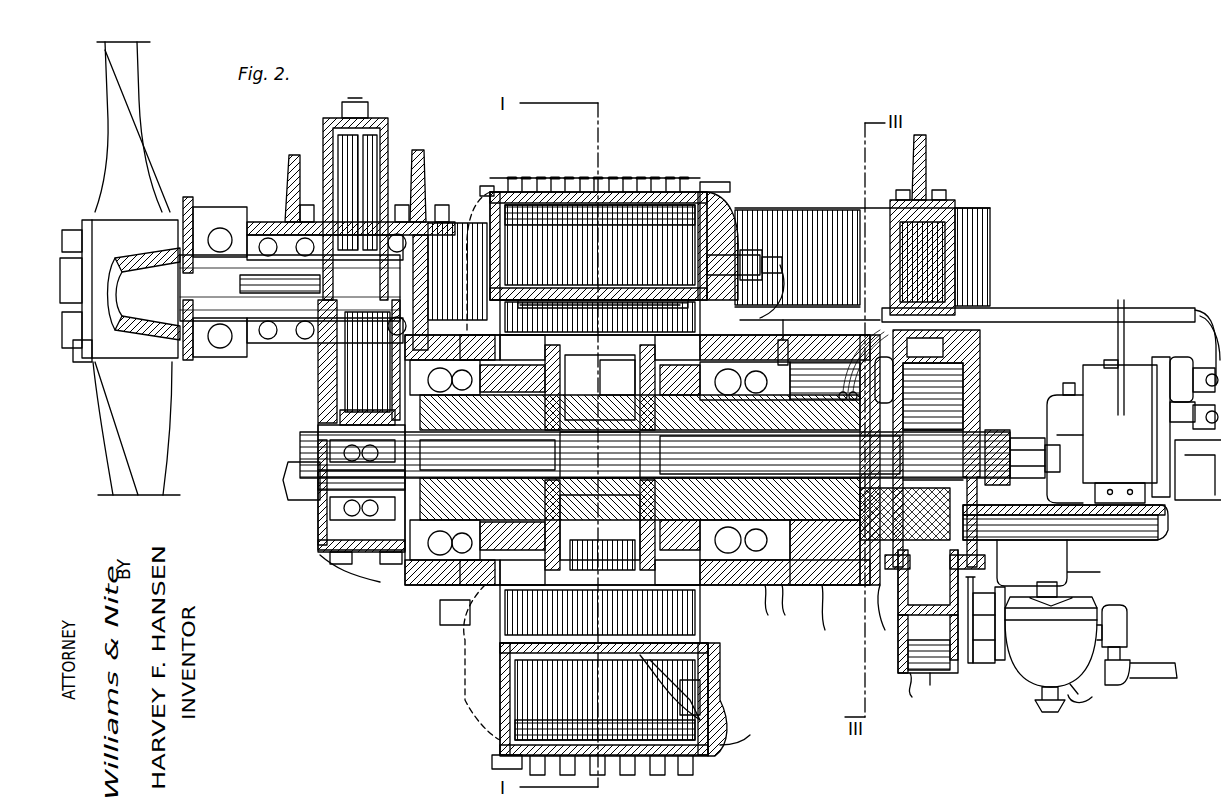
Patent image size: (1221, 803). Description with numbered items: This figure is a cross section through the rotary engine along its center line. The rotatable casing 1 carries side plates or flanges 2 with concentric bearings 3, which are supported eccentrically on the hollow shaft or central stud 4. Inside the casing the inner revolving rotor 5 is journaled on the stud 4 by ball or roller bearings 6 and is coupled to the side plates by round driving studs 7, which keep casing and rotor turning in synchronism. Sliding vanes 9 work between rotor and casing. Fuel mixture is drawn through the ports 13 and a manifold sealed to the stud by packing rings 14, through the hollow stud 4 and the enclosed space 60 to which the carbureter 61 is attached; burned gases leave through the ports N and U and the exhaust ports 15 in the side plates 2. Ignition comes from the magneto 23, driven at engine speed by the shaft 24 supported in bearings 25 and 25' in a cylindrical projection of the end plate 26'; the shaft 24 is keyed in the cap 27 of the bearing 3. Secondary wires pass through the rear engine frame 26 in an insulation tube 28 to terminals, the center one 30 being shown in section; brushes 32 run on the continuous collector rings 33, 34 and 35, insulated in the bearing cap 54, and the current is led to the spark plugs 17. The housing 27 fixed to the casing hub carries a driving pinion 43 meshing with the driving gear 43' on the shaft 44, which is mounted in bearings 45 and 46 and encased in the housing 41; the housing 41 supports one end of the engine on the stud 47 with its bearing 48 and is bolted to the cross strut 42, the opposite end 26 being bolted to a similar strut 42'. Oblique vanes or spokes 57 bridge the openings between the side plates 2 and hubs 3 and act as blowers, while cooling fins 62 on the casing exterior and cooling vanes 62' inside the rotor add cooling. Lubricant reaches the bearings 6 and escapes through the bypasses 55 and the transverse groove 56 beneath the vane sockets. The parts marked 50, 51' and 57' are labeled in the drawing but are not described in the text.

The rotatable casing 1 is at (665, 185).
The side plates 2 is at (500, 712).
The concentric bearings 3 is at (420, 592).
The hollow shaft 4 is at (340, 418).
The inner revolving rotor 5 is at (830, 505).
The ball or roller bearings 6 is at (525, 570).
The driving studs 7 is at (620, 310).
The vane 9 is at (660, 245).
The ports 13 is at (600, 455).
The packing rings 14 is at (600, 387).
The exhaust port 15 is at (768, 676).
The spark plugs 17 is at (762, 265).
The magneto 23 is at (1102, 384).
The shaft 24 is at (487, 455).
The bearing 25 is at (1022, 424).
The bearing 25' is at (877, 380).
The rear engine frame 26 is at (931, 691).
The end plate 26' is at (935, 449).
The bearing cap 27 is at (430, 600).
The insulation tube 28 is at (1058, 309).
The center terminal 30 is at (835, 388).
The brushes 32 is at (794, 342).
The collector ring 33 is at (781, 600).
The collector ring 34 is at (802, 600).
The collector ring 35 is at (831, 611).
The housing 41 is at (327, 370).
The cross strut 42 is at (351, 182).
The strut 42' is at (944, 225).
The driving pinion 43 is at (295, 581).
The driving gear 43' is at (387, 195).
The shaft 44 is at (188, 235).
The bearing 45 is at (225, 240).
The bearing 46 is at (425, 235).
The stud 47 is at (318, 480).
The bearing 48 is at (318, 447).
The rotor core 50 is at (600, 525).
The rotor ring 51' is at (617, 377).
The bearing cap 54 is at (900, 585).
The bypasses 55 is at (600, 464).
The transverse groove 56 is at (572, 298).
The oblique vanes 57 is at (629, 480).
The coil 57' is at (421, 622).
The enclosed space 60 is at (918, 590).
The carbureter 61 is at (1028, 676).
The cooling fins 62 is at (780, 412).
The cooling vanes 62' is at (760, 507).
The port N is at (700, 672).
The port U is at (722, 742).